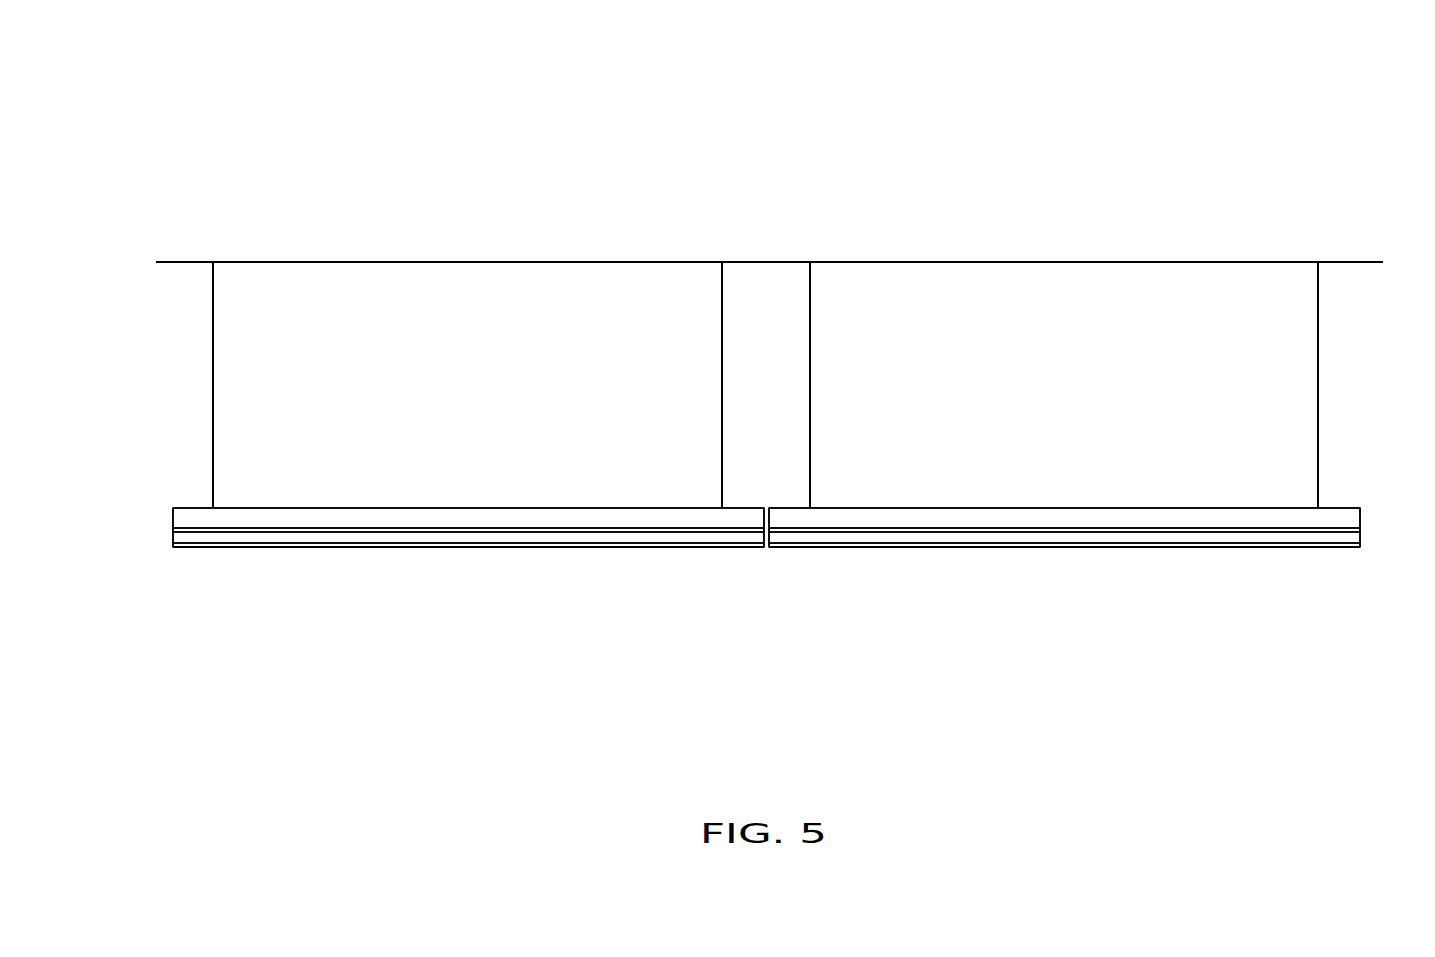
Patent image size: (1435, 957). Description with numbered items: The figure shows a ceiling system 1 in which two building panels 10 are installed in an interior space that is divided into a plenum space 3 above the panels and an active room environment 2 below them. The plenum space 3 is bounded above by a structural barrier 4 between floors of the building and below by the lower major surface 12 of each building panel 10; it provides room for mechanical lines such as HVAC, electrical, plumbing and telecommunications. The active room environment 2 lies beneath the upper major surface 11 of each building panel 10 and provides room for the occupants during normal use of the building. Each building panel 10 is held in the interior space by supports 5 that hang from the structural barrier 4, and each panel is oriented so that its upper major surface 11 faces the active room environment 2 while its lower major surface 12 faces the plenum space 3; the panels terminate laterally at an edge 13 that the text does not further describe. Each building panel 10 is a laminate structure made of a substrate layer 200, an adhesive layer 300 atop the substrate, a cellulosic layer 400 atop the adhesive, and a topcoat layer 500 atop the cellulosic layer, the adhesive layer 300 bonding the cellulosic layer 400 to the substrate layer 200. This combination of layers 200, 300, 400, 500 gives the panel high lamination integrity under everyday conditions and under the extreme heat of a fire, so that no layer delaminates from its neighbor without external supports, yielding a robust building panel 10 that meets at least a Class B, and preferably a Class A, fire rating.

The ceiling system 1 is at (1224, 146).
The active room environment 2 is at (1202, 698).
The plenum space 3 is at (1352, 378).
The structural barrier 4 is at (192, 262).
The support 5 is at (213, 396).
The building panel 10 is at (161, 542).
The upper major surface 11 is at (492, 547).
The lower major surface 12 is at (430, 507).
The edge portion 13 is at (172, 520).
The substrate layer 200 is at (592, 518).
The adhesive layer 300 is at (647, 532).
The cellulosic layer 400 is at (547, 537).
The topcoat layer 500 is at (567, 547).